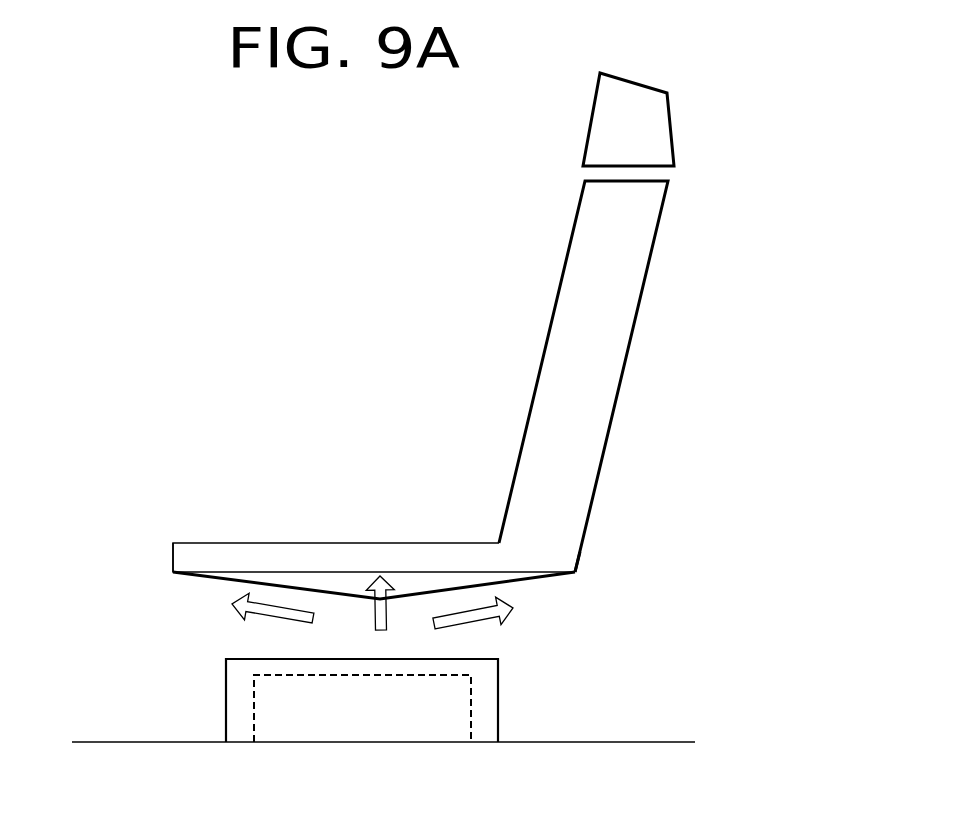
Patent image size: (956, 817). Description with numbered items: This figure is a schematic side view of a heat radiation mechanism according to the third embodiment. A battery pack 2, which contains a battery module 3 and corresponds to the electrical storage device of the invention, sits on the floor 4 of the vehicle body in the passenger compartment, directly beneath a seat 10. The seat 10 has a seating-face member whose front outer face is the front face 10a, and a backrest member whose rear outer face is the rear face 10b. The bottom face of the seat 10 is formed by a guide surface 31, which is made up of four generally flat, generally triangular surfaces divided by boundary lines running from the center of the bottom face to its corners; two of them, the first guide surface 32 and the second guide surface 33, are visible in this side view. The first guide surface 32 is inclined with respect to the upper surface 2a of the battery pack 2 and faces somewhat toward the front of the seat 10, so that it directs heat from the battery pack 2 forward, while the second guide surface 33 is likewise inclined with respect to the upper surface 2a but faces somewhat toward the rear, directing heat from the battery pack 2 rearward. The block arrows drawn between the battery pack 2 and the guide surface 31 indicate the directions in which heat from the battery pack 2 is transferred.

The seat 10 is at (560, 348).
The front face 10a is at (173, 558).
The rear face 10b is at (583, 548).
The guide surface 31 is at (388, 463).
The first guide surface 32 is at (247, 586).
The second guide surface 33 is at (450, 588).
The battery pack 2 is at (226, 700).
The upper surface 2a is at (287, 658).
The battery module 3 is at (471, 707).
The floor 4 is at (542, 742).